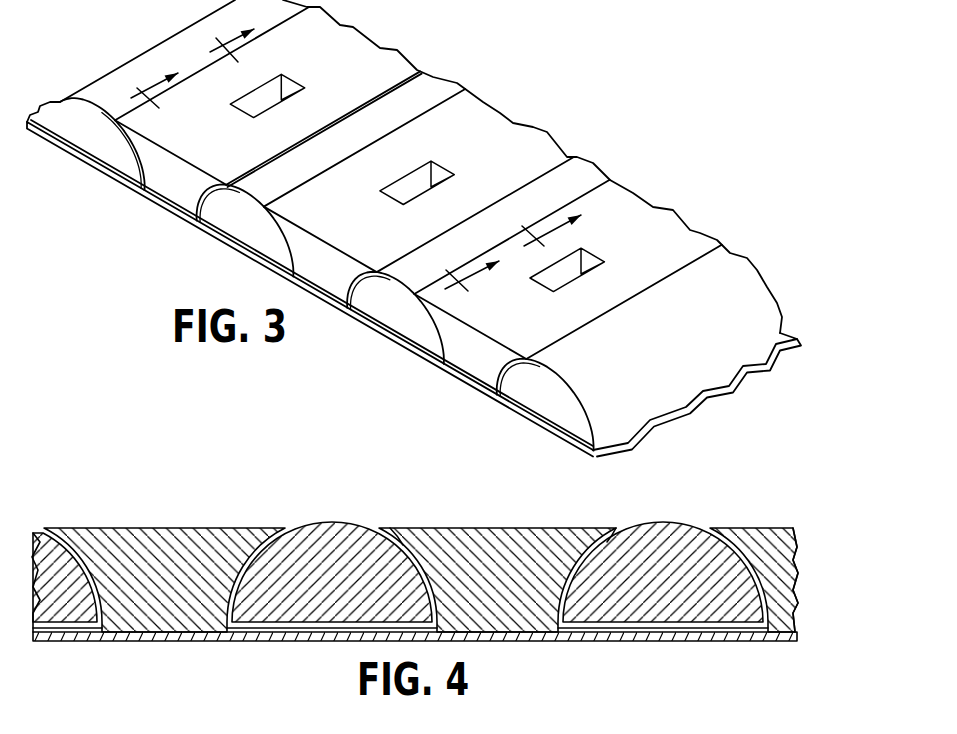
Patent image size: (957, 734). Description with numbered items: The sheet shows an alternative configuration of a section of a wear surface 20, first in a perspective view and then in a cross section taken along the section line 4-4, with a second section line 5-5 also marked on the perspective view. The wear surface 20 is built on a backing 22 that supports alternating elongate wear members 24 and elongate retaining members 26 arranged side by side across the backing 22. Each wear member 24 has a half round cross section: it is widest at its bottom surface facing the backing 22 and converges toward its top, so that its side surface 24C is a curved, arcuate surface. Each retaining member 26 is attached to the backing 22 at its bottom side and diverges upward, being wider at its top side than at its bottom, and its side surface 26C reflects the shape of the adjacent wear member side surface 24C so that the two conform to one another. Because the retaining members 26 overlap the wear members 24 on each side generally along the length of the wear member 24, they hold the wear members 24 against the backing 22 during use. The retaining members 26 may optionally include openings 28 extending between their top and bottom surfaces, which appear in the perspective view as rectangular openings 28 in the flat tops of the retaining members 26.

In FIG. 3, the wear surface 20 is at (508, 93).
In FIG. 4, the wear surface 20 is at (291, 499).
In FIG. 3, the backing 22 is at (530, 421).
In FIG. 4, the backing 22 is at (508, 641).
In FIG. 3, the elongate wear member 24 is at (247, 228).
In FIG. 4, the elongate wear member 24 is at (344, 594).
In FIG. 3, the retaining member 26 is at (172, 190).
In FIG. 4, the retaining member 26 is at (177, 594).
In FIG. 3, the opening 28 is at (288, 86).
In FIG. 4, the wear member side surface 24C is at (407, 546).
In FIG. 4, the retaining member side surface 26C is at (606, 544).
In FIG. 3, the section line 4- 4 is at (305, 193).
In FIG. 3, the section line 5- 5 is at (386, 147).